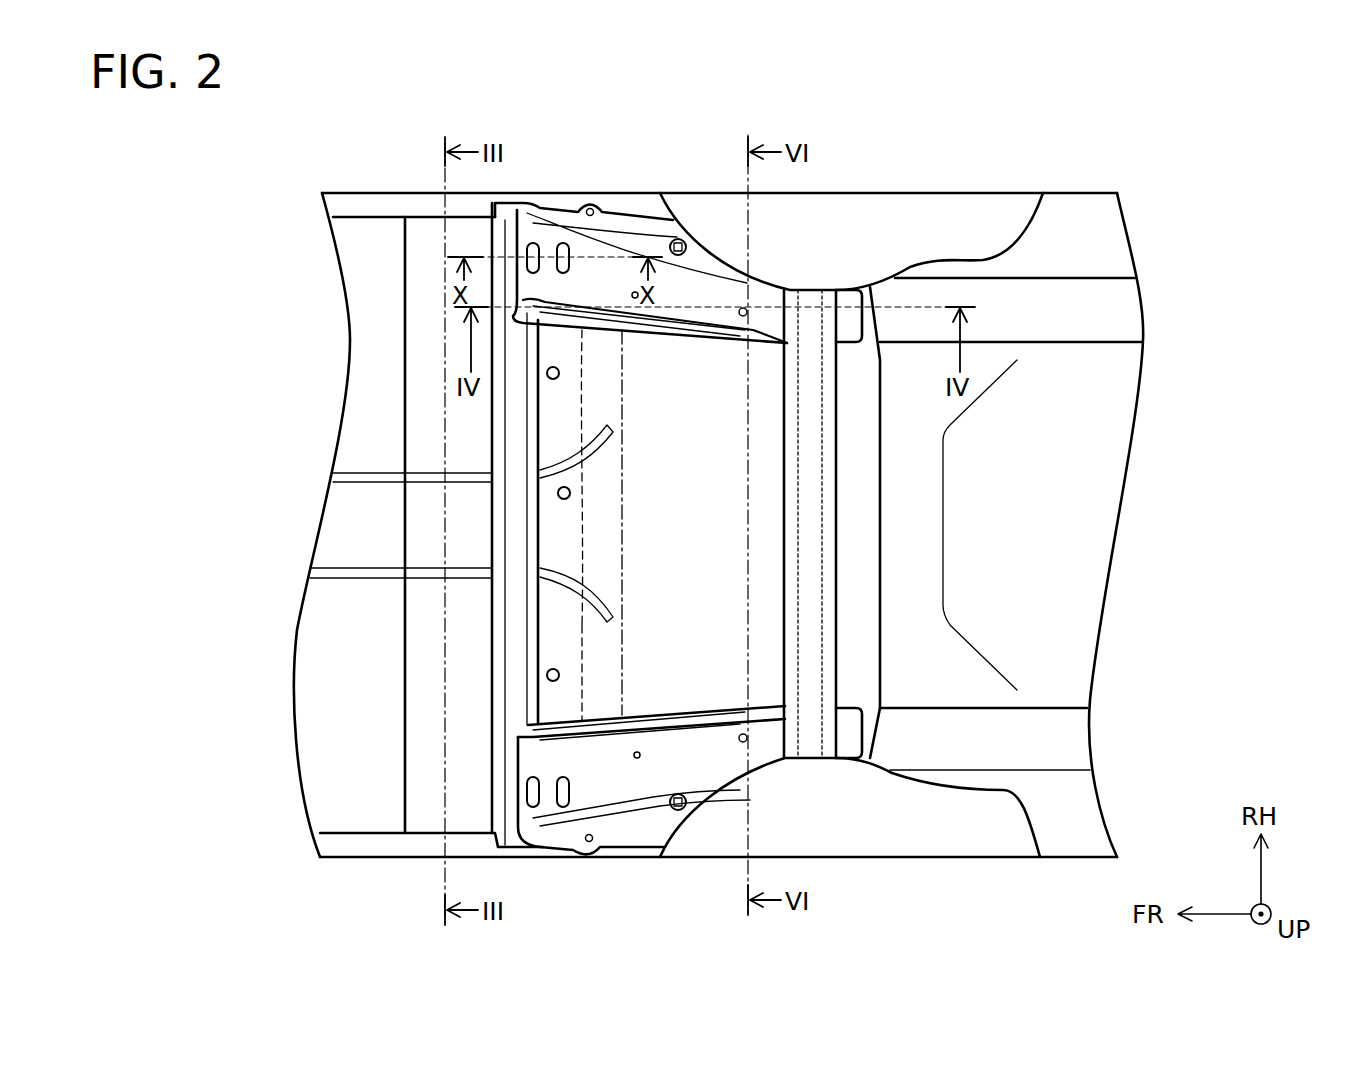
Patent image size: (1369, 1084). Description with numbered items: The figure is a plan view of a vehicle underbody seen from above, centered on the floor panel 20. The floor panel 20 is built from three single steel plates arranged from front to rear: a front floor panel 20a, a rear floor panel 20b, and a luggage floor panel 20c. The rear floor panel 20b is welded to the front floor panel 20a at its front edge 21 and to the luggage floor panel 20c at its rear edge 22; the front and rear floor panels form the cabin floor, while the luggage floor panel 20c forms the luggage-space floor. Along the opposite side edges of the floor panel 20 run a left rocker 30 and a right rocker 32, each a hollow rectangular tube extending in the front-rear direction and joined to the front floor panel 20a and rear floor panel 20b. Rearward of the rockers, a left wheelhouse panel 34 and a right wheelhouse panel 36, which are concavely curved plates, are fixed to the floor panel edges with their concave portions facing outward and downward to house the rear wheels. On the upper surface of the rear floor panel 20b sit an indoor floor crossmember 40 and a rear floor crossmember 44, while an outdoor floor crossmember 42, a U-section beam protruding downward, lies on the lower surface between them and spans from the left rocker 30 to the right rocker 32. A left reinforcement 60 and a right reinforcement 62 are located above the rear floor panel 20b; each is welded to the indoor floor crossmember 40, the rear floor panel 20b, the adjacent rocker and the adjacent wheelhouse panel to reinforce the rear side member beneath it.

The floor panel 20 is at (877, 106).
The front floor panel 20a is at (380, 235).
The rear floor panel 20b is at (432, 235).
The luggage floor panel 20c is at (928, 380).
The front edge 21 is at (403, 338).
The rear edge 22 is at (883, 465).
The left rocker 30 is at (342, 848).
The right rocker 32 is at (340, 205).
The left wheelhouse panel 34 is at (1007, 838).
The right wheelhouse panel 36 is at (967, 217).
The indoor floor crossmember 40 is at (518, 667).
The outdoor floor crossmember 42 is at (593, 618).
The rear floor crossmember 44 is at (810, 548).
The left reinforcement 60 is at (511, 705).
The right reinforcement 62 is at (498, 250).